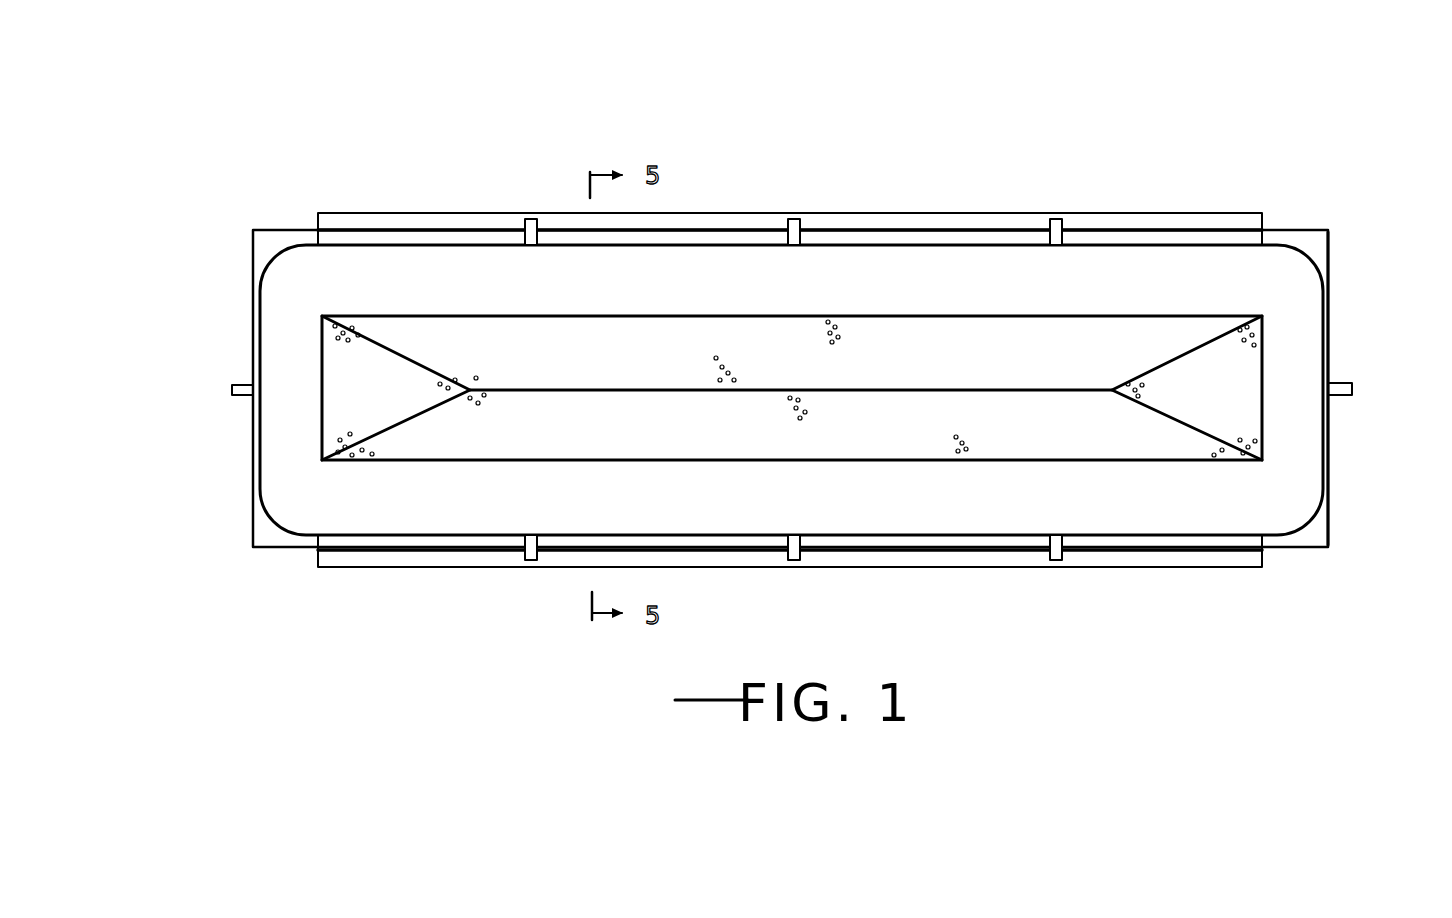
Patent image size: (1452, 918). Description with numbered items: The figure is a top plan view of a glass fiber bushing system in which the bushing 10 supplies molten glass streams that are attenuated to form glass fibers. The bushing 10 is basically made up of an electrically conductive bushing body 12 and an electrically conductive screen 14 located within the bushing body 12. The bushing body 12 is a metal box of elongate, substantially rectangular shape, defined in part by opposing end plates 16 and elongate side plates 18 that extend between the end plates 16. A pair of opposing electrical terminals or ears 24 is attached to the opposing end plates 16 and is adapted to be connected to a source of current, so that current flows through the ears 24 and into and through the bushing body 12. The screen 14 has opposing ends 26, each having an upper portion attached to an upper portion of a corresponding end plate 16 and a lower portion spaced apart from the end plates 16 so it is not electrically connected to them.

The bushing 10 is at (1205, 118).
The bushing body 12 is at (300, 204).
The screen 14 is at (1232, 370).
The end plates 16 is at (1268, 238).
The side plates 18 is at (1247, 222).
The ears 24 is at (252, 250).
The ends 26 is at (295, 426).